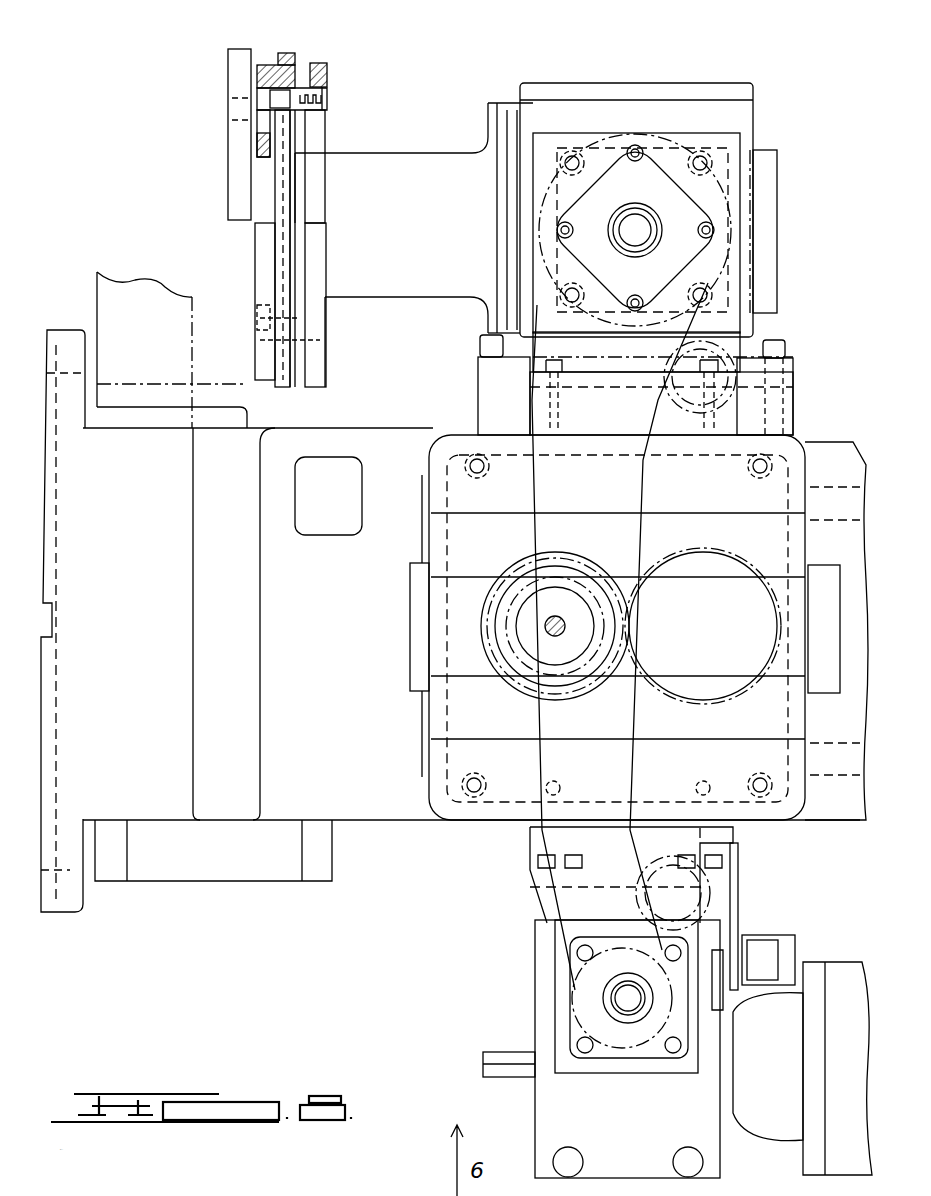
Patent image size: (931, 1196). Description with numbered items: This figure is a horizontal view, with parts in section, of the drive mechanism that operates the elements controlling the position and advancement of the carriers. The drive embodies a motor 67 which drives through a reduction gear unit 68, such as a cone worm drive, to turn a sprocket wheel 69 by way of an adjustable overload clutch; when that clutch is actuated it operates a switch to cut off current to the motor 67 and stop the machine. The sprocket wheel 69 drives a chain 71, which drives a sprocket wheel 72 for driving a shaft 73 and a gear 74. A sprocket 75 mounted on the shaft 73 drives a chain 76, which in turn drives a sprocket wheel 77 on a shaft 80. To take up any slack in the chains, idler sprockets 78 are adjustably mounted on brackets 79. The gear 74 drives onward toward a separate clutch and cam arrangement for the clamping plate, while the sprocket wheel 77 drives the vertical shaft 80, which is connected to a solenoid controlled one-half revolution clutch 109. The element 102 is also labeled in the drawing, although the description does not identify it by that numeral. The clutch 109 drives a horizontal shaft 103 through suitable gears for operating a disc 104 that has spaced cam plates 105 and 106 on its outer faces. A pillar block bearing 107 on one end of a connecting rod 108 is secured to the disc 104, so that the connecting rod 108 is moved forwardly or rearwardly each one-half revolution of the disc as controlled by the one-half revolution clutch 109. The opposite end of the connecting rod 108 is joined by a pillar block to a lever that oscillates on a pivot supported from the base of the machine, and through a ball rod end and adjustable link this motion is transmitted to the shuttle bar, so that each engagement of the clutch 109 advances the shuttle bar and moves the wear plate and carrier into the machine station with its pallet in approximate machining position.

The motor 67 is at (837, 972).
The reduction gear unit 68 is at (540, 1025).
The sprocket wheel 69 is at (555, 985).
The chain 71 is at (522, 745).
The sprocket wheel 72 is at (498, 636).
The shaft 73 is at (546, 622).
The gear 74 is at (546, 548).
The sprocket 75 is at (556, 592).
The chain 76 is at (520, 492).
The sprocket wheel 77 is at (540, 262).
The idler sprockets 78 is at (790, 350).
The brackets 79 is at (790, 383).
The vertical shaft 80 is at (633, 218).
The motor mounting flange 102 is at (530, 147).
The horizontal shaft 103 is at (295, 245).
The disc 104 is at (255, 283).
The cam plate 105 is at (296, 55).
The cam plate 106 is at (327, 75).
The pillar block bearing 107 is at (228, 108).
The connecting rod 108 is at (232, 142).
The one-half revolution clutch 109 is at (685, 210).